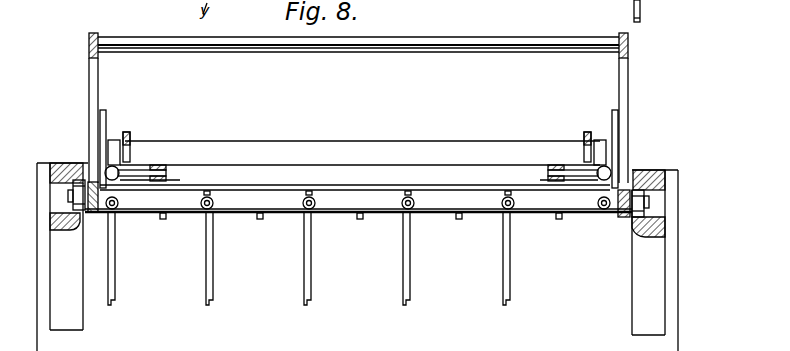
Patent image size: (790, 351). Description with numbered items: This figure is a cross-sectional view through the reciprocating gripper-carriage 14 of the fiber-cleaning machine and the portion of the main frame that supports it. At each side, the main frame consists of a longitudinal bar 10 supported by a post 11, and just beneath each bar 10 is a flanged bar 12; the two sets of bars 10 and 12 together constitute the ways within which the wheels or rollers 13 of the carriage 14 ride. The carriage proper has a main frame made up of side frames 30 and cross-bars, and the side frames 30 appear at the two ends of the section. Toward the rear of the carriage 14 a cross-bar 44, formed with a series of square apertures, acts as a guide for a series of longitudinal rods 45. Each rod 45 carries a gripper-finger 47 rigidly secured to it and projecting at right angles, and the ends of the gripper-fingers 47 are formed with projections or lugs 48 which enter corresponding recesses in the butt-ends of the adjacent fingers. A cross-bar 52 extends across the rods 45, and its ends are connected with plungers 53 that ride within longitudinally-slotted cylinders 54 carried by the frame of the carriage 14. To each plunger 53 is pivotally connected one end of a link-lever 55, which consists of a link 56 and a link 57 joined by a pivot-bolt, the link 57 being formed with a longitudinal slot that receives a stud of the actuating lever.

The longitudinal bars 10 is at (60, 162).
The posts 11 is at (36, 275).
The flanged bars 12 is at (62, 231).
The wheels or rollers 13 is at (70, 197).
The reciprocating gripper-carriage 14 is at (355, 156).
The side frames 30 is at (88, 50).
The cross-bar 44 is at (377, 214).
The longitudinal rods 45 is at (118, 203).
The gripper-fingers 47 is at (519, 253).
The projections or lugs 48 is at (641, 21).
The cross-bar 52 is at (479, 214).
The plungers 53 is at (603, 140).
The longitudinally-slotted cylinders 54 is at (113, 140).
The link-lever 55 is at (540, 181).
The link 56 is at (132, 173).
The link 57 is at (166, 167).